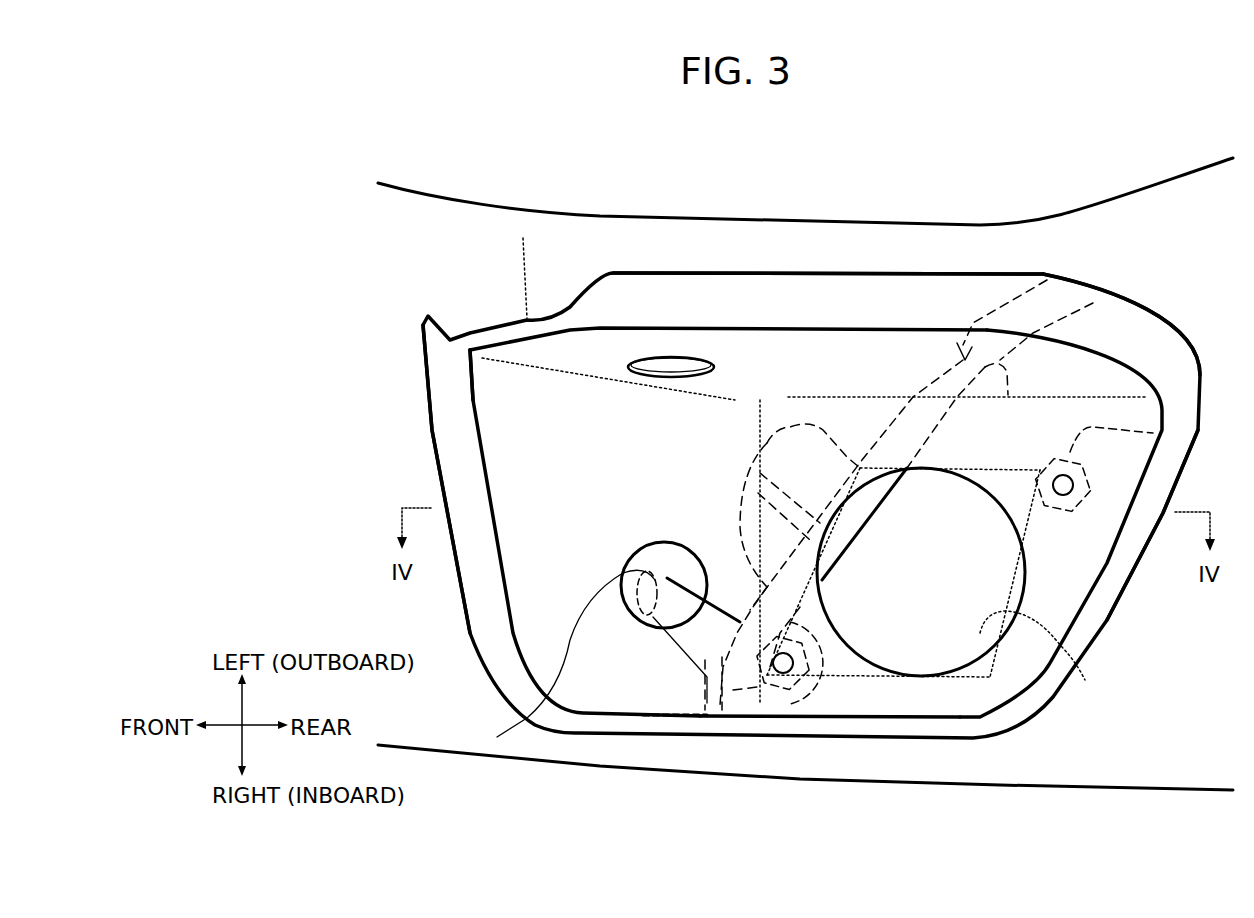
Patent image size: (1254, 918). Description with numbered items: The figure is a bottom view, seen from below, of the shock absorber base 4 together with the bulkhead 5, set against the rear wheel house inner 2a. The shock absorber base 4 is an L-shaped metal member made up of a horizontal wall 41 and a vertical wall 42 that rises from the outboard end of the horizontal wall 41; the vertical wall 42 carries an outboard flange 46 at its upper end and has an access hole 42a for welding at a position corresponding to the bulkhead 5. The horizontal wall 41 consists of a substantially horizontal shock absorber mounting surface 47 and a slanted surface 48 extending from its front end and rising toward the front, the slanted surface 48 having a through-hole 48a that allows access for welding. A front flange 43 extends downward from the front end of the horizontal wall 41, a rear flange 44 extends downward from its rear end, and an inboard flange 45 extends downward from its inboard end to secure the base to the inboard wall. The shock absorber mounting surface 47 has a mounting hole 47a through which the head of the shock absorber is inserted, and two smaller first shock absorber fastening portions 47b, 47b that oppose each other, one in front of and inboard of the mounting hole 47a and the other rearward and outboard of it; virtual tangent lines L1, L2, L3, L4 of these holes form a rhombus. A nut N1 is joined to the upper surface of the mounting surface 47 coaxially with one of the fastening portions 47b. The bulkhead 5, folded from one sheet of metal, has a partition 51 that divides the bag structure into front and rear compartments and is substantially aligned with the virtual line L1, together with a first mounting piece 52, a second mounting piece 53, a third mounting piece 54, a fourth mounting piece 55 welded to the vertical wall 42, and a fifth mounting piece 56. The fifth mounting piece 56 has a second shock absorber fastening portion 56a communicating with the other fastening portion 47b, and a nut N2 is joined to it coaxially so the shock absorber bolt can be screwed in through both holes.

The rear wheel house inner 2a is at (660, 233).
The shock absorber base 4 is at (616, 280).
The bulkhead 5 is at (1046, 280).
The horizontal wall 41 is at (811, 562).
The vertical wall 42 is at (817, 353).
The access hole 42a is at (687, 370).
The front flange 43 is at (452, 428).
The rear flange 44 is at (1163, 468).
The inboard flange 45 is at (897, 730).
The outboard flange 46 is at (897, 303).
The shock absorber mounting surface 47 is at (940, 697).
The mounting hole 47a is at (1080, 667).
The first shock absorber fastening portion 47b is at (1066, 490).
The slanted surface 48 is at (603, 690).
The through-hole 48a is at (580, 663).
The partition 51 is at (950, 430).
The first mounting piece 52 is at (677, 717).
The second mounting piece 53 is at (662, 582).
The third mounting piece 54 is at (773, 443).
The fourth mounting piece 55 is at (1093, 303).
The fifth mounting piece 56 is at (820, 683).
The second shock absorber fastening portion 56a is at (821, 744).
The nut N1 is at (1157, 433).
The nut N2 is at (776, 705).
The virtual line L1 is at (817, 587).
The virtual tangent line L2 is at (987, 472).
The virtual tangent line L3 is at (1030, 556).
The virtual tangent line L4 is at (873, 662).